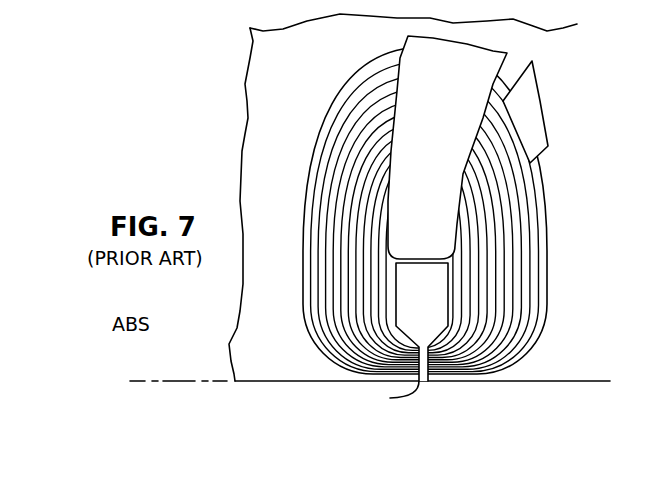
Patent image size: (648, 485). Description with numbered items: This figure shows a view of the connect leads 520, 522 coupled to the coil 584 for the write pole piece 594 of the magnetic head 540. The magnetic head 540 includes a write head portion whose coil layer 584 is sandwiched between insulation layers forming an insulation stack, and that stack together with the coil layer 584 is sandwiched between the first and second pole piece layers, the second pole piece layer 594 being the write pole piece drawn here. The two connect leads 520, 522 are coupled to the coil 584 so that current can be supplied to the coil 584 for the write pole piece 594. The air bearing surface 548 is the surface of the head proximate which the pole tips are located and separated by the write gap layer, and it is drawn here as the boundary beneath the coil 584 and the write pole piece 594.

The connect lead 520 is at (448, 145).
The connect lead 522 is at (542, 102).
The magnetic head 540 is at (557, 198).
The coil layer 584 is at (522, 283).
The air bearing surface (ABS) 548 is at (180, 380).
The second pole piece layer 594 is at (436, 313).